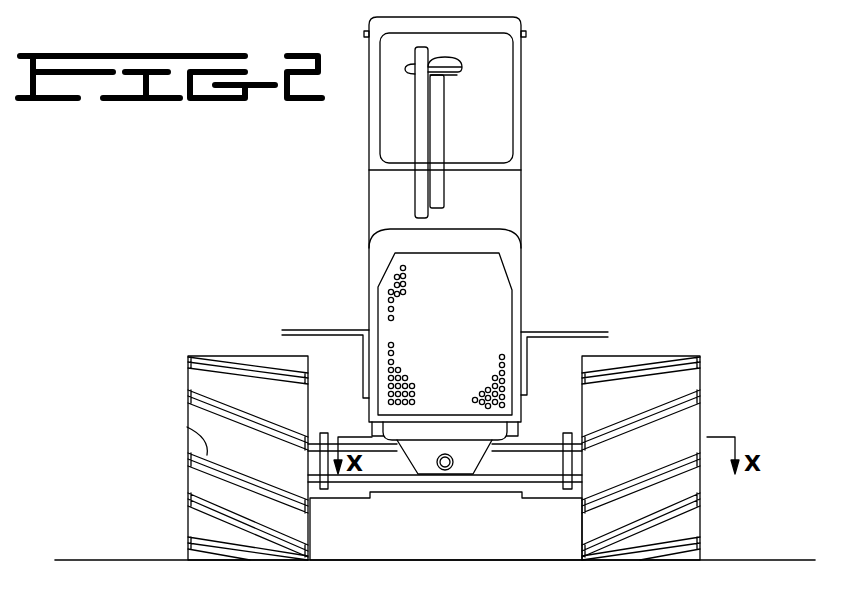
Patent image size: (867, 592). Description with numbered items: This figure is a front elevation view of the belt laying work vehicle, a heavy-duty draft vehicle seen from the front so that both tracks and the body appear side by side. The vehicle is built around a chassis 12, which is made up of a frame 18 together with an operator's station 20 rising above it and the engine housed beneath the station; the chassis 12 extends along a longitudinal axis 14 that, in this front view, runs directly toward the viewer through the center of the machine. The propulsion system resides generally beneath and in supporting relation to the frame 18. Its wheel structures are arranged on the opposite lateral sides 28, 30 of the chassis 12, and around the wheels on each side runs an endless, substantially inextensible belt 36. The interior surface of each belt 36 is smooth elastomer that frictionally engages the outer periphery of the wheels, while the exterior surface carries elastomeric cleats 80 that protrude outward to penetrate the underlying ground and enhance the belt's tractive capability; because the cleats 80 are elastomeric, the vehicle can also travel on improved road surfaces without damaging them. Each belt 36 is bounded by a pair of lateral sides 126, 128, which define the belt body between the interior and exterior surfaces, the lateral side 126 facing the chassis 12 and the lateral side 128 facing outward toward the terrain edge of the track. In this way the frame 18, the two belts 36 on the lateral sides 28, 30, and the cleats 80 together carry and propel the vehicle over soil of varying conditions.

The operator's station 20 is at (517, 27).
The chassis 12 is at (517, 253).
The longitudinal axis 14 is at (447, 347).
The frame 18 is at (365, 398).
The lateral side 28 is at (180, 222).
The lateral side 30 is at (645, 225).
The endless, substantially inextensible belt 36 is at (433, 458).
The elastomeric cleat 80 is at (203, 405).
The lateral side of belt 126 is at (187, 430).
The lateral side of belt 128 is at (310, 533).